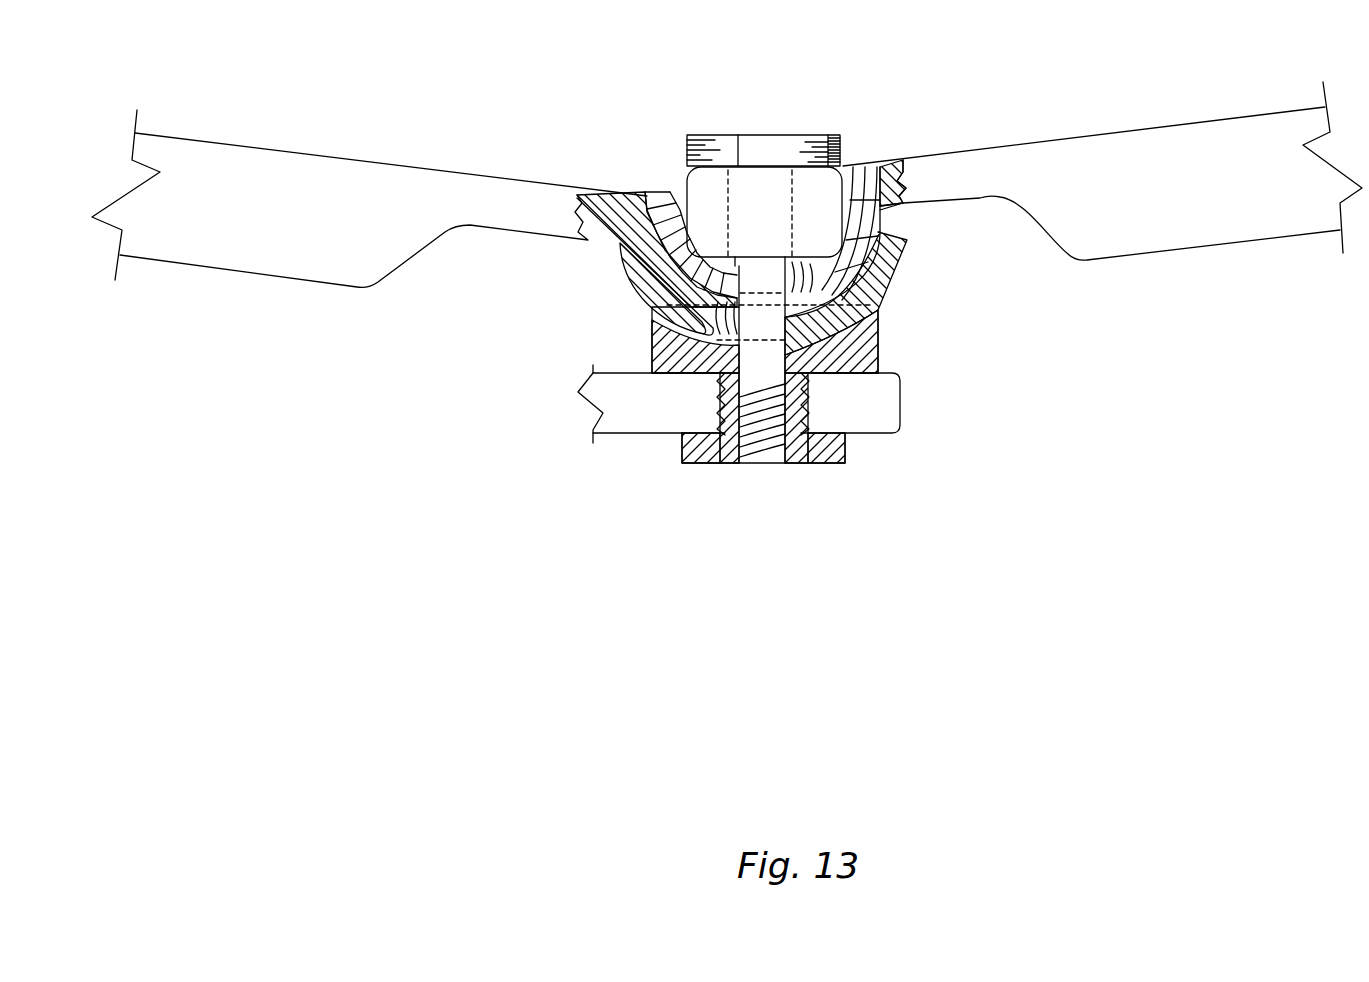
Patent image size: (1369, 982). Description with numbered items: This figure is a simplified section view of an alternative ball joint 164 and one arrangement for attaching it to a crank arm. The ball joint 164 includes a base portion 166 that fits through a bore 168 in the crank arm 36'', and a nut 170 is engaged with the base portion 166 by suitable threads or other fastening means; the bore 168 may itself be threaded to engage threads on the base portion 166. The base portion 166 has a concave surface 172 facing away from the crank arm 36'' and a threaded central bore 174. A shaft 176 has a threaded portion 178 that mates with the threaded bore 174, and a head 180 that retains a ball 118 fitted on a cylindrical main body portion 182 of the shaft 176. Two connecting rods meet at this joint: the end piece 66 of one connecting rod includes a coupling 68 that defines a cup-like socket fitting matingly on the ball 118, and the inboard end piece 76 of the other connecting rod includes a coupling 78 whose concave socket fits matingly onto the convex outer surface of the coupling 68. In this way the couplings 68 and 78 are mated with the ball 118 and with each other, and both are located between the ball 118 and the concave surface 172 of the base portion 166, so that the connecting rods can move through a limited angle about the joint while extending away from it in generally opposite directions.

The inboard end piece 76 is at (382, 167).
The end piece 66 is at (1155, 252).
The ball 118 is at (902, 180).
The ball joint 164 is at (878, 124).
The coupling 68 is at (653, 190).
The concave surface 172 is at (640, 278).
The coupling 78 is at (902, 288).
The head 180 is at (685, 136).
The cylindrical main body portion 182 is at (723, 192).
The shaft 176 is at (792, 134).
The base portion 166 is at (878, 347).
The crank arm 36'' is at (802, 404).
The nut 170 is at (678, 450).
The bore 168 is at (840, 462).
The threaded central bore 174 is at (763, 420).
The threaded portion 178 is at (787, 415).